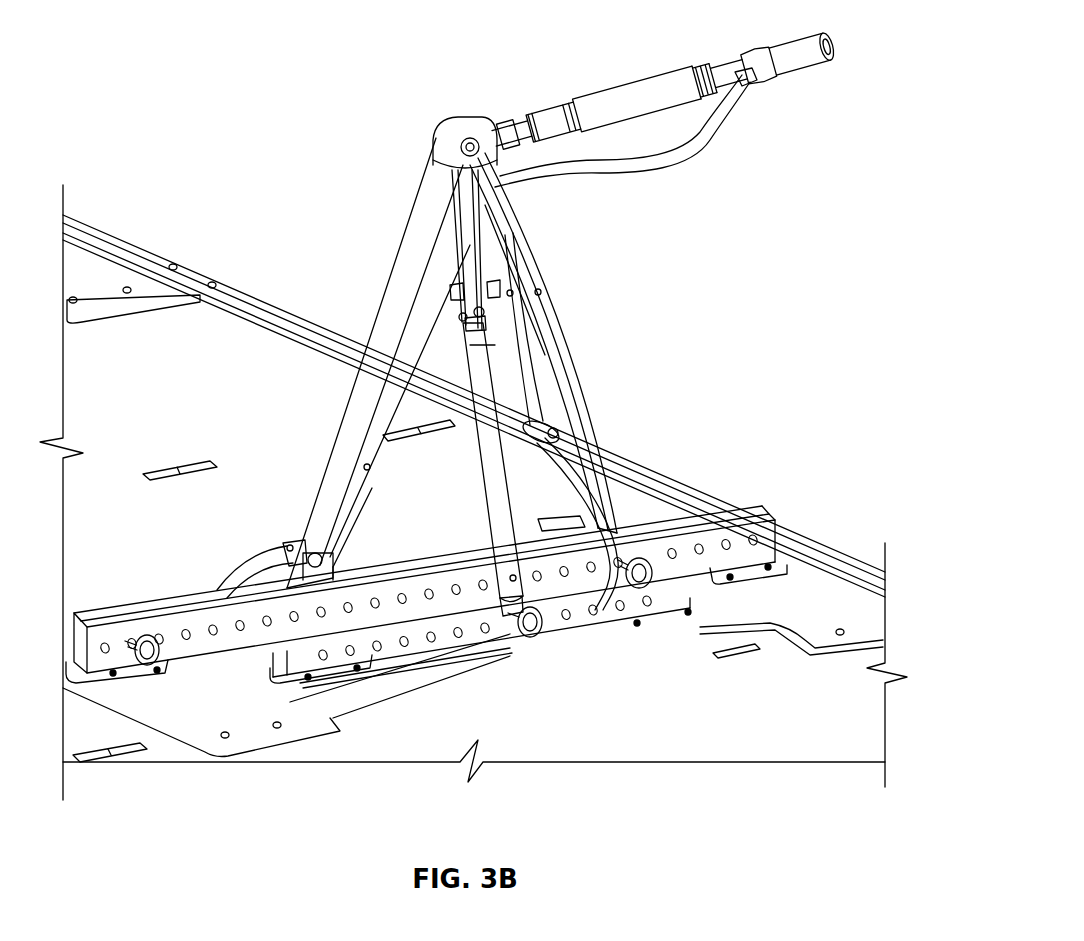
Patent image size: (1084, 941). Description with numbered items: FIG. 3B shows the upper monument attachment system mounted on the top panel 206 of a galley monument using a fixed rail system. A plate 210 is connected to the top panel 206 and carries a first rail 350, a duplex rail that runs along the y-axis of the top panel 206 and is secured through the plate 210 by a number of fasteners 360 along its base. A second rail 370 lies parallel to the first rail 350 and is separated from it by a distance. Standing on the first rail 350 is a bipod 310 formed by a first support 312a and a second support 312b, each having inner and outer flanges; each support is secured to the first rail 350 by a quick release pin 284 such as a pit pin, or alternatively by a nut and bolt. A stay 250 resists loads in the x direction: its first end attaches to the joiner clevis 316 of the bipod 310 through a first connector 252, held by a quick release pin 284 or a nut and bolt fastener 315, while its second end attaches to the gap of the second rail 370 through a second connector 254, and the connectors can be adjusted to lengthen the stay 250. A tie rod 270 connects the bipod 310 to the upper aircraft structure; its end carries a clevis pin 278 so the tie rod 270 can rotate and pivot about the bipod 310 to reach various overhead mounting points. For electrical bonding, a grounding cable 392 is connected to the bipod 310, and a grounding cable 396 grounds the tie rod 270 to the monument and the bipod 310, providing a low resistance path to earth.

The top panel 206 is at (867, 713).
The plate 210 is at (810, 573).
The stay 250 is at (490, 522).
The first connector 252 is at (486, 312).
The second connector 254 is at (510, 620).
The tie rod 270 is at (627, 86).
The clevis pin 278 is at (470, 126).
The quick release pin 284 is at (150, 665).
The bipod 310 is at (424, 161).
The first support 312a is at (573, 352).
The second support 312b is at (347, 407).
The nut and bolt fastener 315 is at (462, 318).
The joiner clevis 316 is at (467, 303).
The first rail 350 is at (770, 502).
The fasteners 360 is at (637, 627).
The second rail 370 is at (568, 637).
The grounding cable 392 is at (250, 566).
The grounding cable 396 is at (680, 163).